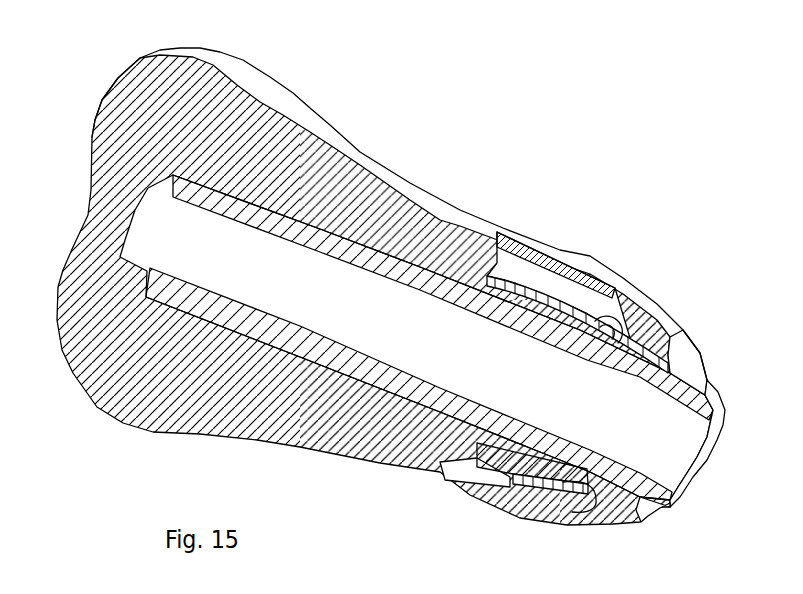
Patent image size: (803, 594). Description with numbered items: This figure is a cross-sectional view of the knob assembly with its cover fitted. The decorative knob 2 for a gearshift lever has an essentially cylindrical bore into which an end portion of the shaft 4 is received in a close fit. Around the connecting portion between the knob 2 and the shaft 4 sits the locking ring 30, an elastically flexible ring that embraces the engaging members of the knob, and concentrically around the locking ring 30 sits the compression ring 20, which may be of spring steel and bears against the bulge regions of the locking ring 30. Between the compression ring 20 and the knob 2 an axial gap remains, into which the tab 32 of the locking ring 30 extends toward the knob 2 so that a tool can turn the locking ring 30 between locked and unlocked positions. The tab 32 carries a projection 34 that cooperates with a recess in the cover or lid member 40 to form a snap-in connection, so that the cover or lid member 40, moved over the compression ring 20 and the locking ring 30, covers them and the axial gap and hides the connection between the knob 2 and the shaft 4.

The decorative knob 2 is at (345, 140).
The shaft 4 is at (728, 402).
The compression ring 20 is at (601, 267).
The locking ring 30 is at (630, 310).
The tab 32 is at (558, 256).
The projection 34 is at (527, 236).
The cover or lid member 40 is at (629, 280).